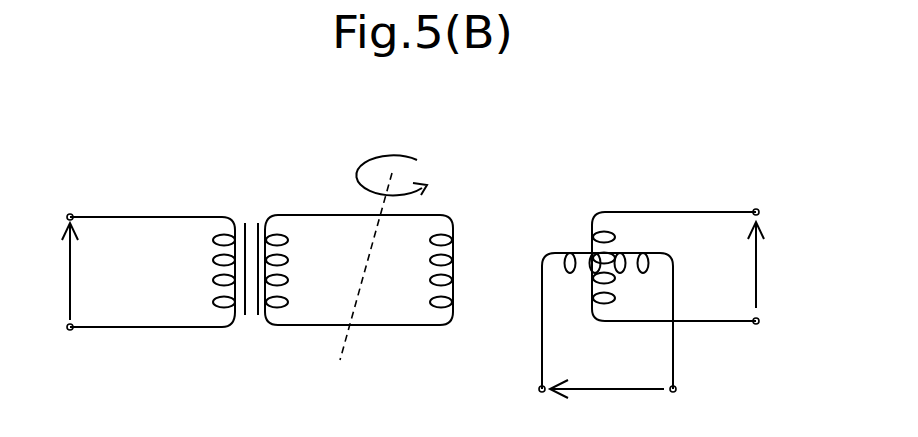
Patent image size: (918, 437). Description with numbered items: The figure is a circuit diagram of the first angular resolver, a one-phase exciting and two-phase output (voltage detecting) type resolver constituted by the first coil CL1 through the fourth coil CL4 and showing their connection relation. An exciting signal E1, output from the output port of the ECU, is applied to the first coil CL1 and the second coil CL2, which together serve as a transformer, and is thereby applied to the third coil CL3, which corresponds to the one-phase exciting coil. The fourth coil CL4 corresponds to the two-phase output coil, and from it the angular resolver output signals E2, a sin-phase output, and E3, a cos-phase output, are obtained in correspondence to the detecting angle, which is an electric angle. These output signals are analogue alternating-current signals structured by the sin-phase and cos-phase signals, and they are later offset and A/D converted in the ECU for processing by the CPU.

The first coil CL1 is at (151, 253).
The second coil CL2 is at (359, 251).
The third coil CL3 is at (468, 259).
The fourth coil CL4 is at (647, 265).
The exciting signal E1 is at (44, 271).
The angular resolver output signal E2 is at (831, 268).
The angular resolver output signal E3 is at (607, 340).